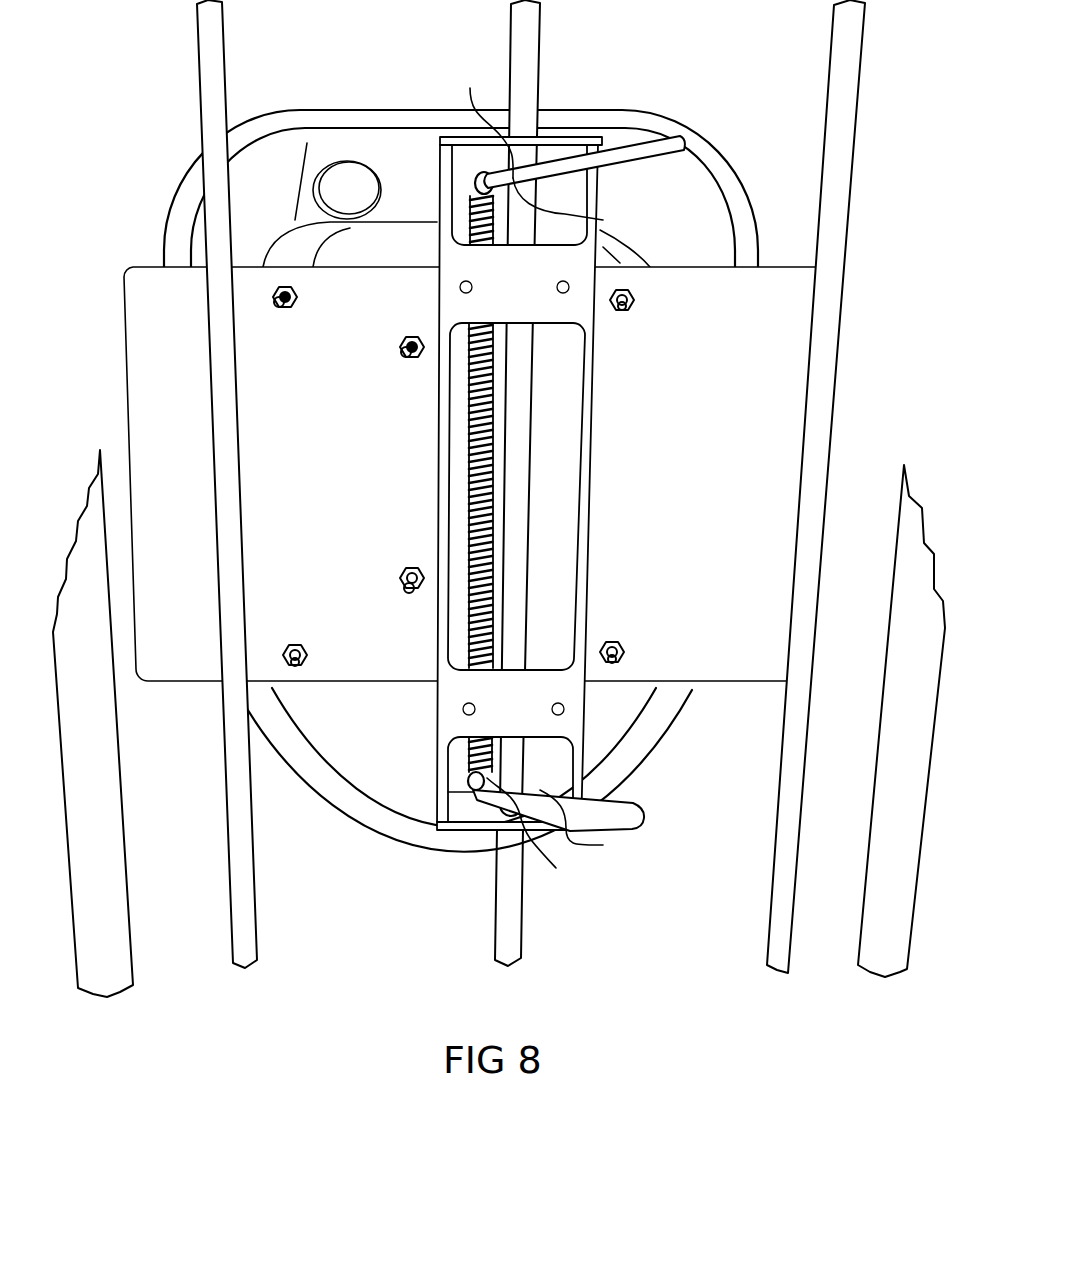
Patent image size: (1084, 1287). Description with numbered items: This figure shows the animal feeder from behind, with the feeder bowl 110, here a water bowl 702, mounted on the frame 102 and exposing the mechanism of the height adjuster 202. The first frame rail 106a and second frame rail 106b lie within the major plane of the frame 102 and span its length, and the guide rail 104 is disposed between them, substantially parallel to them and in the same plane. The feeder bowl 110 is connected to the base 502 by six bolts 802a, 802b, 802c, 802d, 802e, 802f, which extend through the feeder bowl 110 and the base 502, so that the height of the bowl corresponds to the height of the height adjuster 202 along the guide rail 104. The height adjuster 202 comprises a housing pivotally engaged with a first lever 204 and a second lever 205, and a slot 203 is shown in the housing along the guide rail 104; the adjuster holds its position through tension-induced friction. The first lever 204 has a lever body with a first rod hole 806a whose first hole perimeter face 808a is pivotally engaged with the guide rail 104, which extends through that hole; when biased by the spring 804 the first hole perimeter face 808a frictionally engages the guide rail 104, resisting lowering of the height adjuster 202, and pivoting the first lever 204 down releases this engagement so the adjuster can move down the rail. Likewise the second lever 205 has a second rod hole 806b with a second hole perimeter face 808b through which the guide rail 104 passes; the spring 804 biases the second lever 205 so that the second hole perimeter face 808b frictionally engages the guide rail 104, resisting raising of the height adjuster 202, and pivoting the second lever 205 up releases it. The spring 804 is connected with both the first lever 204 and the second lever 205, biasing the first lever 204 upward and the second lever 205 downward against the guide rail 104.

The frame 102 is at (103, 815).
The guide rail 104 is at (541, 40).
The first frame rail 106a is at (218, 46).
The second frame rail 106b is at (834, 22).
The feeder bowl 110 is at (288, 777).
The height adjuster 202 is at (592, 462).
The slot 203 is at (587, 397).
The first lever 204 is at (683, 141).
The second lever 205 is at (641, 813).
The base 502 is at (792, 547).
The water bowl 702 is at (348, 821).
The bolt 802a is at (288, 312).
The bolt 802b is at (310, 652).
The bolt 802c is at (404, 594).
The bolt 802d is at (627, 650).
The bolt 802e is at (636, 300).
The bolt 802f is at (403, 362).
The spring 804 is at (468, 510).
The first rod hole 806a is at (593, 207).
The second rod hole 806b is at (603, 827).
The first hole perimeter face 808a is at (476, 120).
The second hole perimeter face 808b is at (553, 833).